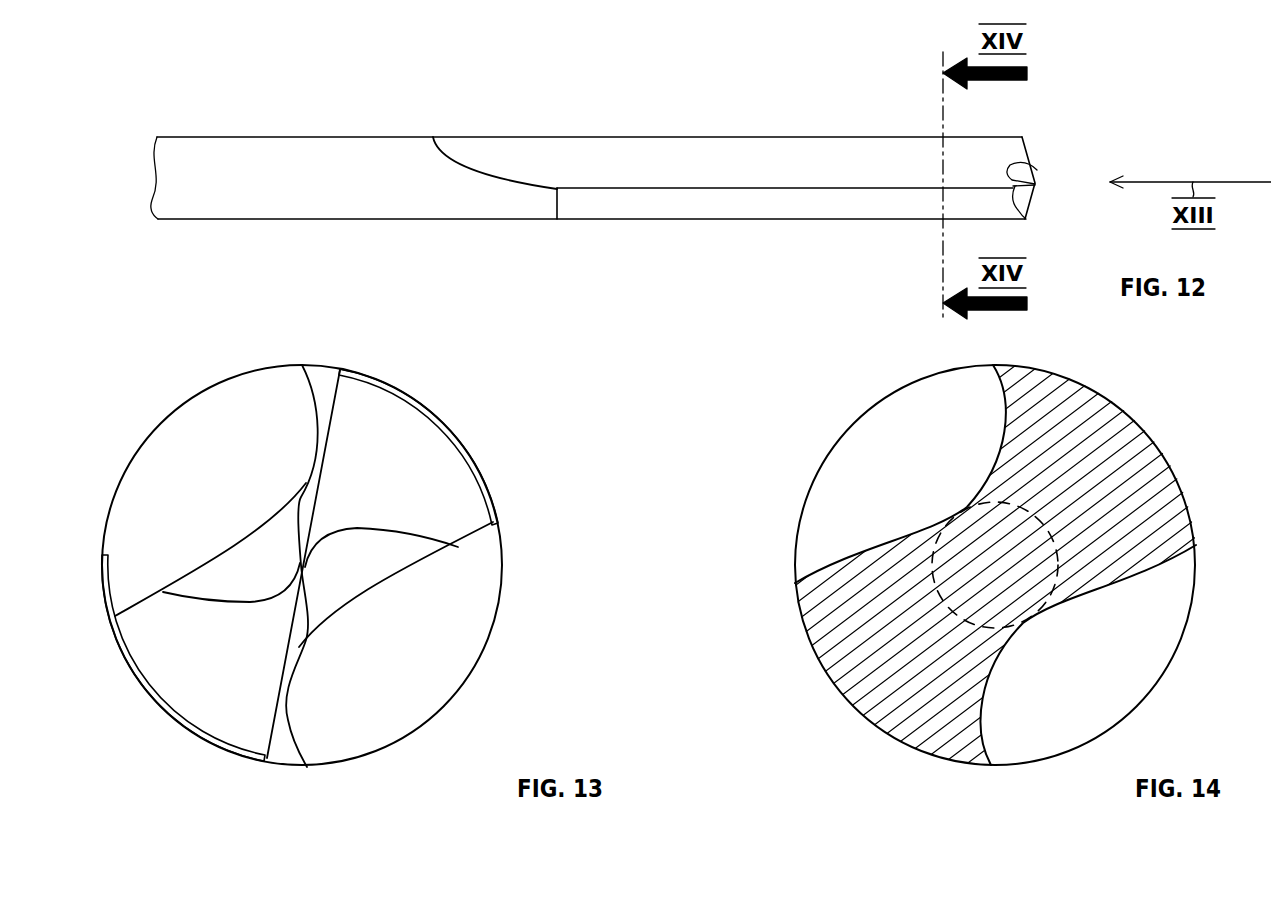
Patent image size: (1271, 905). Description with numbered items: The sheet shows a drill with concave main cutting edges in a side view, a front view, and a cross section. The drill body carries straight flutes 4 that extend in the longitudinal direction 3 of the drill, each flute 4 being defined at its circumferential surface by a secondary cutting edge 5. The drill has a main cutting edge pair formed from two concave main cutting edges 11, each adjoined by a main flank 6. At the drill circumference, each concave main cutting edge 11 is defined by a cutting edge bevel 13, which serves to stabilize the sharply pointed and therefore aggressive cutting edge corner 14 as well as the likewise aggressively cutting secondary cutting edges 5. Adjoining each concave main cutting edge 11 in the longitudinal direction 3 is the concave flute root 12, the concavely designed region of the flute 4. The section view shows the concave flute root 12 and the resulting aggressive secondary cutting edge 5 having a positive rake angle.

In FIG. 12, the longitudinal direction 3 is at (283, 72).
In FIG. 13, the flute 4 is at (202, 437).
In FIG. 14, the flute 4 is at (858, 517).
In FIG. 14, the secondary cutting edge 5 is at (993, 364).
In FIG. 13, the main flank 6 is at (195, 680).
In FIG. 12, the concave main cutting edge 11 is at (1028, 148).
In FIG. 13, the concave main cutting edge 11 is at (317, 447).
In FIG. 14, the concave flute root 12 is at (1007, 430).
In FIG. 13, the cutting edge bevel 13 is at (302, 367).
In FIG. 13, the cutting edge corner 14 is at (304, 368).